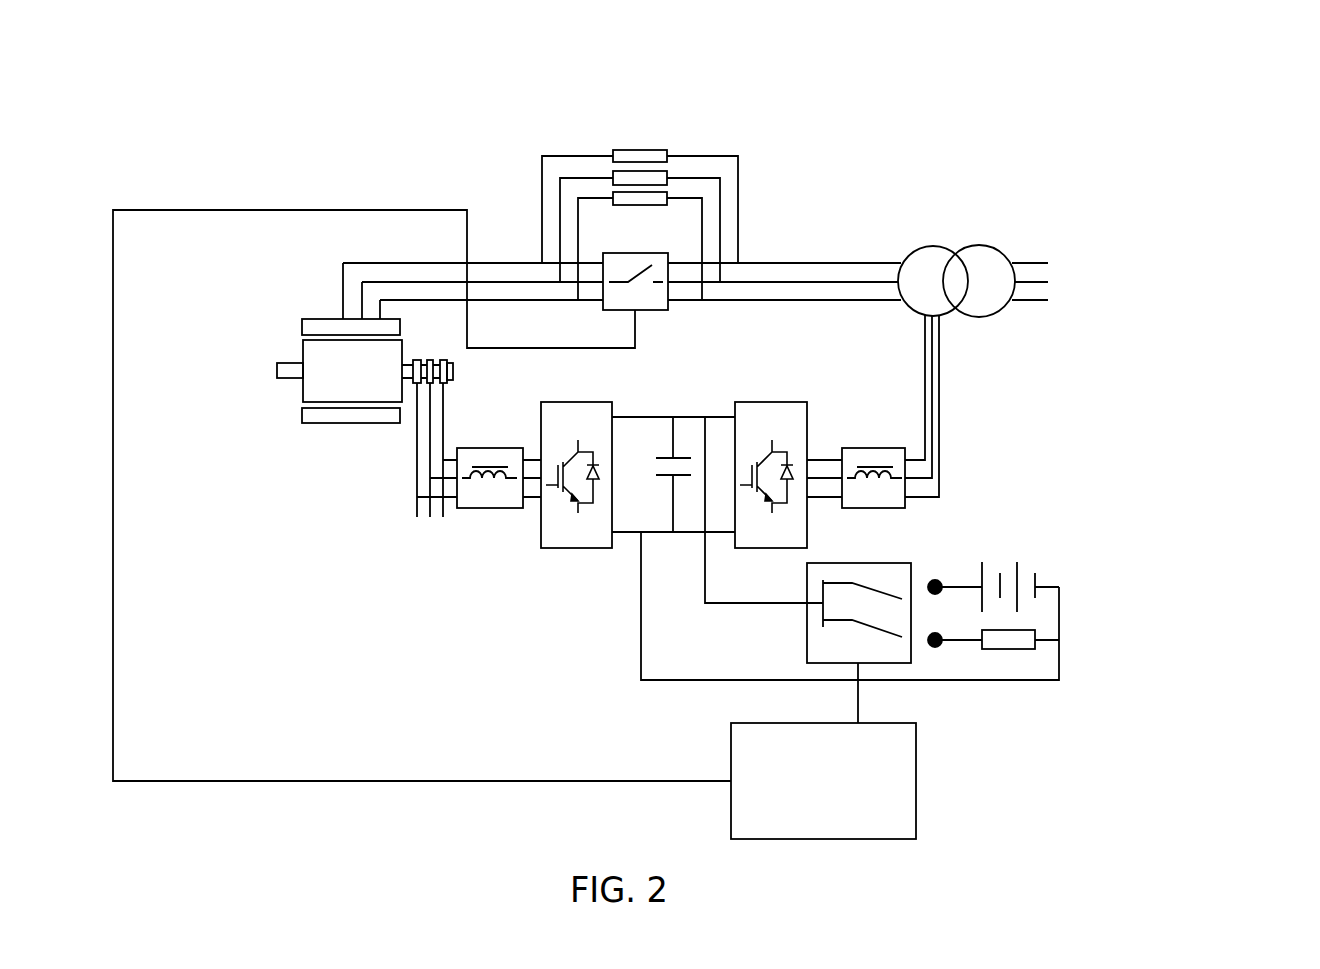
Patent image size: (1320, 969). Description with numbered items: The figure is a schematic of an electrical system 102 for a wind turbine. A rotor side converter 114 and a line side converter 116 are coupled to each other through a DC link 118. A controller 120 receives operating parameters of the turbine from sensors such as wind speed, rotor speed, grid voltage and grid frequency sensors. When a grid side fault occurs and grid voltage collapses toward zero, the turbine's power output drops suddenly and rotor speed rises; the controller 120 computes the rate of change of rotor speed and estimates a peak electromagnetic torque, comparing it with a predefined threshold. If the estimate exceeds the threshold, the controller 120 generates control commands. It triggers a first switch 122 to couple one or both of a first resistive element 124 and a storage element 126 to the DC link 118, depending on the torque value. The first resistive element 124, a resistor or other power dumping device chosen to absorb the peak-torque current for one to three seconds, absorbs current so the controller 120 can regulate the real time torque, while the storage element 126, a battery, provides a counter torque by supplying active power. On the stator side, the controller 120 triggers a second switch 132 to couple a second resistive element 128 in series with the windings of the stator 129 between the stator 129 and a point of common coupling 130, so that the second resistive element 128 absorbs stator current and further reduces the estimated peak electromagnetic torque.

The electrical system 102 is at (1187, 133).
The rotor side converter 114 is at (576, 400).
The line side converter 116 is at (770, 401).
The DC link 118 is at (645, 417).
The controller 120 is at (917, 779).
The first switch 122 is at (858, 563).
The first resistive element 124 is at (1008, 652).
The storage element 126 is at (1037, 578).
The second resistive element 128 is at (640, 148).
The stator 129 is at (312, 318).
The point of common coupling 130 is at (977, 243).
The second switch 132 is at (655, 315).